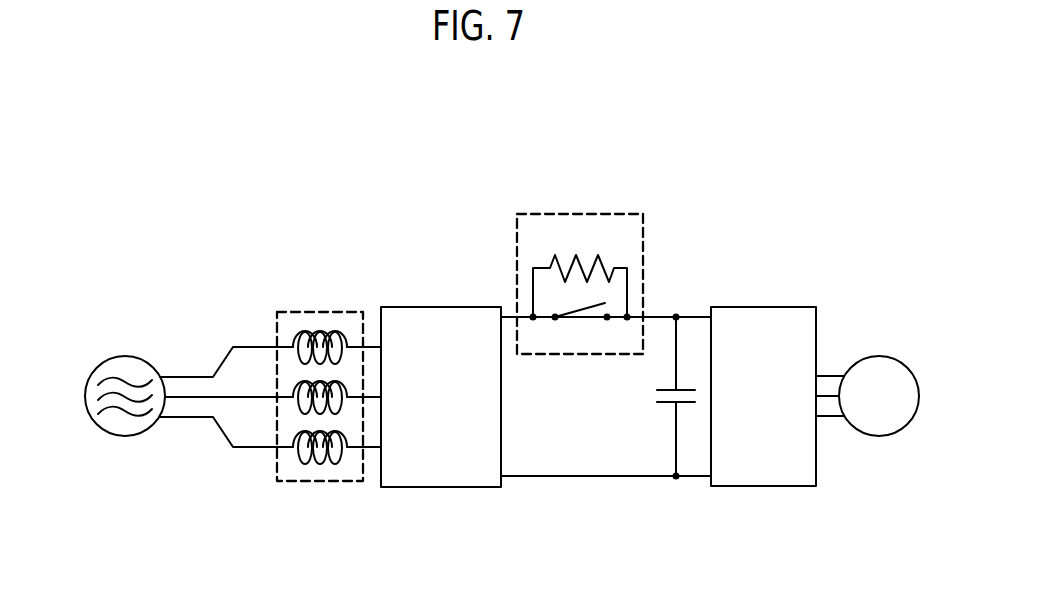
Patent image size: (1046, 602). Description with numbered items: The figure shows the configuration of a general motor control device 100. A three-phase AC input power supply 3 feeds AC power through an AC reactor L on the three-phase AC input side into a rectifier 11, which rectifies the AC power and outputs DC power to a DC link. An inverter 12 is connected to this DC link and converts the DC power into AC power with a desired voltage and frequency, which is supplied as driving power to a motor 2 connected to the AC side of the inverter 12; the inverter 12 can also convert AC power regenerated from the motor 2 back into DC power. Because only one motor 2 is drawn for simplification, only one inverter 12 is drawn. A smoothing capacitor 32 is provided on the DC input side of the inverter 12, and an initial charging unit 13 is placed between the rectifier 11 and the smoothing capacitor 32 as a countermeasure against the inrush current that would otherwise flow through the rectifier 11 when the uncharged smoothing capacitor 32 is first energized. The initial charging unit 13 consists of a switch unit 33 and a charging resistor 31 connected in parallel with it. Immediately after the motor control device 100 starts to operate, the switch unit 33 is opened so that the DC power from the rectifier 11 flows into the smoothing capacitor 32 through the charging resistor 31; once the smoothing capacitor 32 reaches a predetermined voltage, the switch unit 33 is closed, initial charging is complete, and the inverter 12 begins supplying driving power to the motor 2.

The motor control device 100 is at (803, 128).
The motor 2 is at (873, 357).
The three-phase AC input power supply 3 is at (122, 437).
The rectifier 11 is at (438, 307).
The inverter 12 is at (757, 307).
The initial charging unit 13 is at (644, 248).
The charging resistor 31 is at (535, 245).
The smoothing capacitor 32 is at (636, 388).
The switch unit 33 is at (574, 327).
The AC reactor L is at (328, 312).